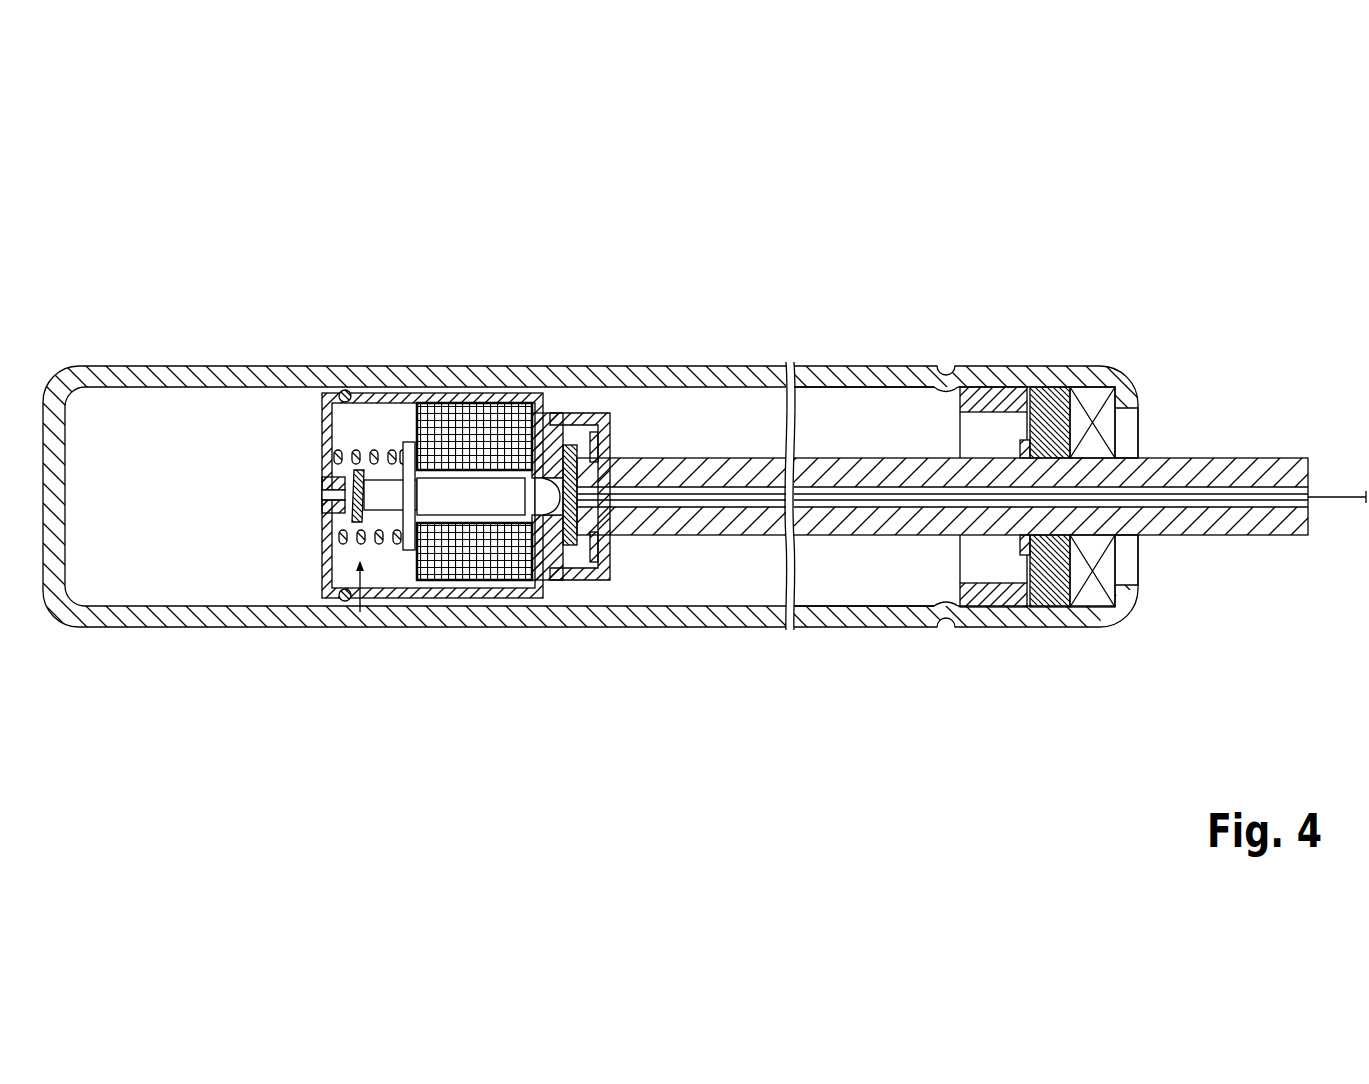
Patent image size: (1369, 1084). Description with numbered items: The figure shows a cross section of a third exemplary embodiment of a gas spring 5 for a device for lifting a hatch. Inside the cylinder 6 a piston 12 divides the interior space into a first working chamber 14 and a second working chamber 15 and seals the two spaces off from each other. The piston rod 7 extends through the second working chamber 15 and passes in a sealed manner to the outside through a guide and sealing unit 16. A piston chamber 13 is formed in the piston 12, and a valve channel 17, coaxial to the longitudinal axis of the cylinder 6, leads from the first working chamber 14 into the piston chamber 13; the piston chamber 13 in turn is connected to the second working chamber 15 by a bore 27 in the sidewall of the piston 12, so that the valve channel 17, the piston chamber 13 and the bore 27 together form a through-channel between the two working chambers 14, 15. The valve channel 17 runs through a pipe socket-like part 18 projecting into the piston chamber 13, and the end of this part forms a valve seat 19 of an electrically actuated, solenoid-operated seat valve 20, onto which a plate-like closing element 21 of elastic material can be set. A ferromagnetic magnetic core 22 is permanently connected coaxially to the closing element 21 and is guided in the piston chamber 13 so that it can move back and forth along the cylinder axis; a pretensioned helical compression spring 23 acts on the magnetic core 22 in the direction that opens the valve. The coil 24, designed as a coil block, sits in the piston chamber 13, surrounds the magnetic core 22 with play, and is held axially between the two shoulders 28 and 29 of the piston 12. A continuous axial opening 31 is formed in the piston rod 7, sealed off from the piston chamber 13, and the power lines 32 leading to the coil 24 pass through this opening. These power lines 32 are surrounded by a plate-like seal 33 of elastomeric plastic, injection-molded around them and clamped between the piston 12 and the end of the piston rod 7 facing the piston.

The electromagnetic actuator 5 is at (875, 280).
The cylinder 6 is at (152, 378).
The piston rod 7 is at (1263, 470).
The piston 12 is at (440, 400).
The piston chamber 13 is at (365, 417).
The first working chamber 14 is at (150, 578).
The second working chamber 15 is at (868, 573).
The guide and sealing unit 16 is at (1052, 378).
The valve channel 17 is at (330, 495).
The pipe socket-like part 18 is at (326, 482).
The valve seat 19 is at (325, 517).
The seat valve 20 is at (357, 629).
The closing element 21 is at (352, 488).
The magnetic core 22 is at (483, 487).
The spring 23 is at (308, 395).
The coil 24 is at (455, 580).
The bore 27 is at (392, 595).
The shoulder 28 is at (402, 412).
The shoulder 29 is at (545, 590).
The axial opening 31 is at (1183, 492).
The power lines 32 is at (1330, 498).
The seal 33 is at (578, 440).